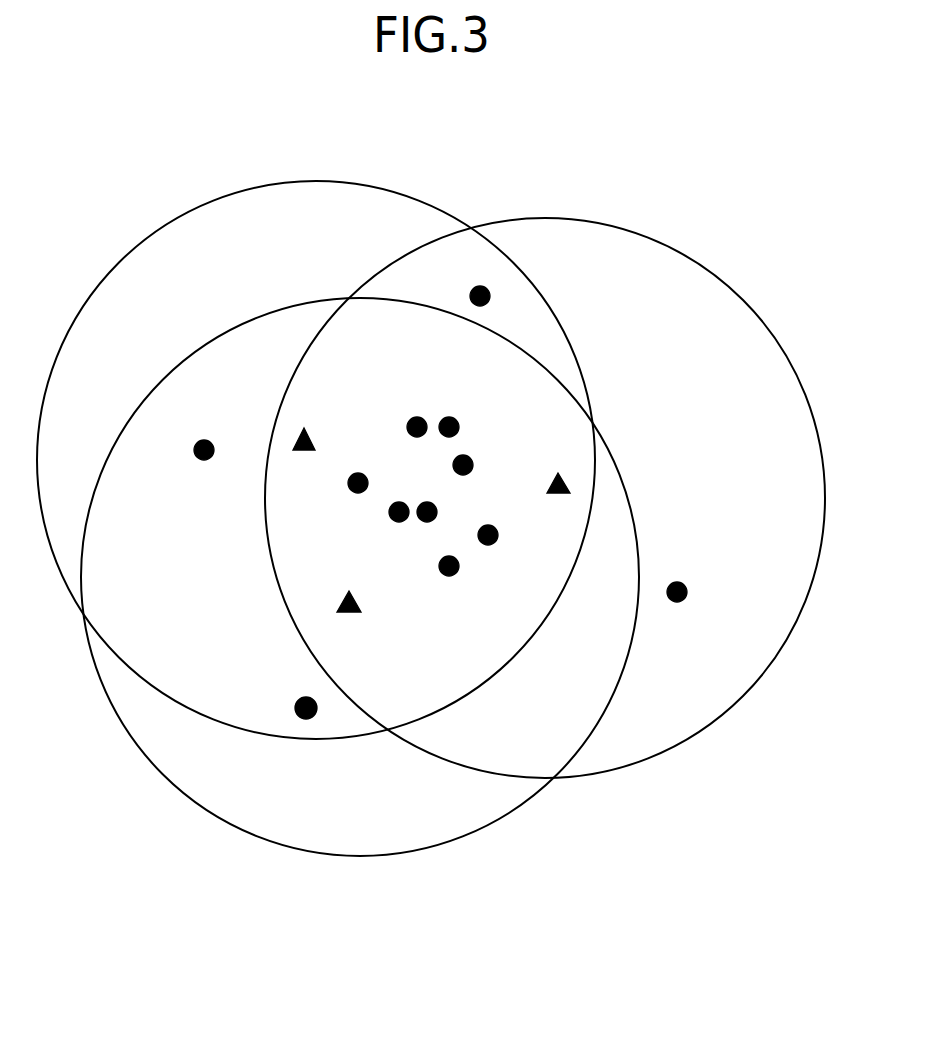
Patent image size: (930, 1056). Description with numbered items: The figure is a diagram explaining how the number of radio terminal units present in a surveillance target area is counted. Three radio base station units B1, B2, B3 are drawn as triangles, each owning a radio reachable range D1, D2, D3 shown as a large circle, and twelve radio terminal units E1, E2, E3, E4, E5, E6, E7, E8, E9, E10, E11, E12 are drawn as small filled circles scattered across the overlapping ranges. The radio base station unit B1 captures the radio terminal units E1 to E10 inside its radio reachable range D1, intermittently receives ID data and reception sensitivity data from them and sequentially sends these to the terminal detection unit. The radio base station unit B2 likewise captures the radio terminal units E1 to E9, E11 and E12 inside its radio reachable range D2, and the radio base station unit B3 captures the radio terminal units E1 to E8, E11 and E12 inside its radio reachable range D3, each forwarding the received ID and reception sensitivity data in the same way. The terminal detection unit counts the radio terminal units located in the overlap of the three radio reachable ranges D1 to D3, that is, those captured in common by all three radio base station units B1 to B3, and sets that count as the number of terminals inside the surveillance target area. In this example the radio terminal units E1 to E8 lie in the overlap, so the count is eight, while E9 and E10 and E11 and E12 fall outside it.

The radio reachable range D1 is at (548, 218).
The radio reachable range D2 is at (316, 182).
The radio reachable range D3 is at (357, 856).
The radio base station unit B1 is at (569, 484).
The radio base station unit B2 is at (300, 451).
The radio base station unit B3 is at (350, 612).
The radio terminal unit E1 is at (493, 527).
The radio terminal unit E2 is at (450, 577).
The radio terminal unit E3 is at (425, 502).
The radio terminal unit E4 is at (397, 522).
The radio terminal unit E5 is at (356, 473).
The radio terminal unit E6 is at (471, 460).
The radio terminal unit E7 is at (452, 418).
The radio terminal unit E8 is at (415, 418).
The radio terminal unit E9 is at (490, 295).
The radio terminal unit E10 is at (684, 583).
The radio terminal unit E11 is at (303, 698).
The radio terminal unit E12 is at (205, 440).